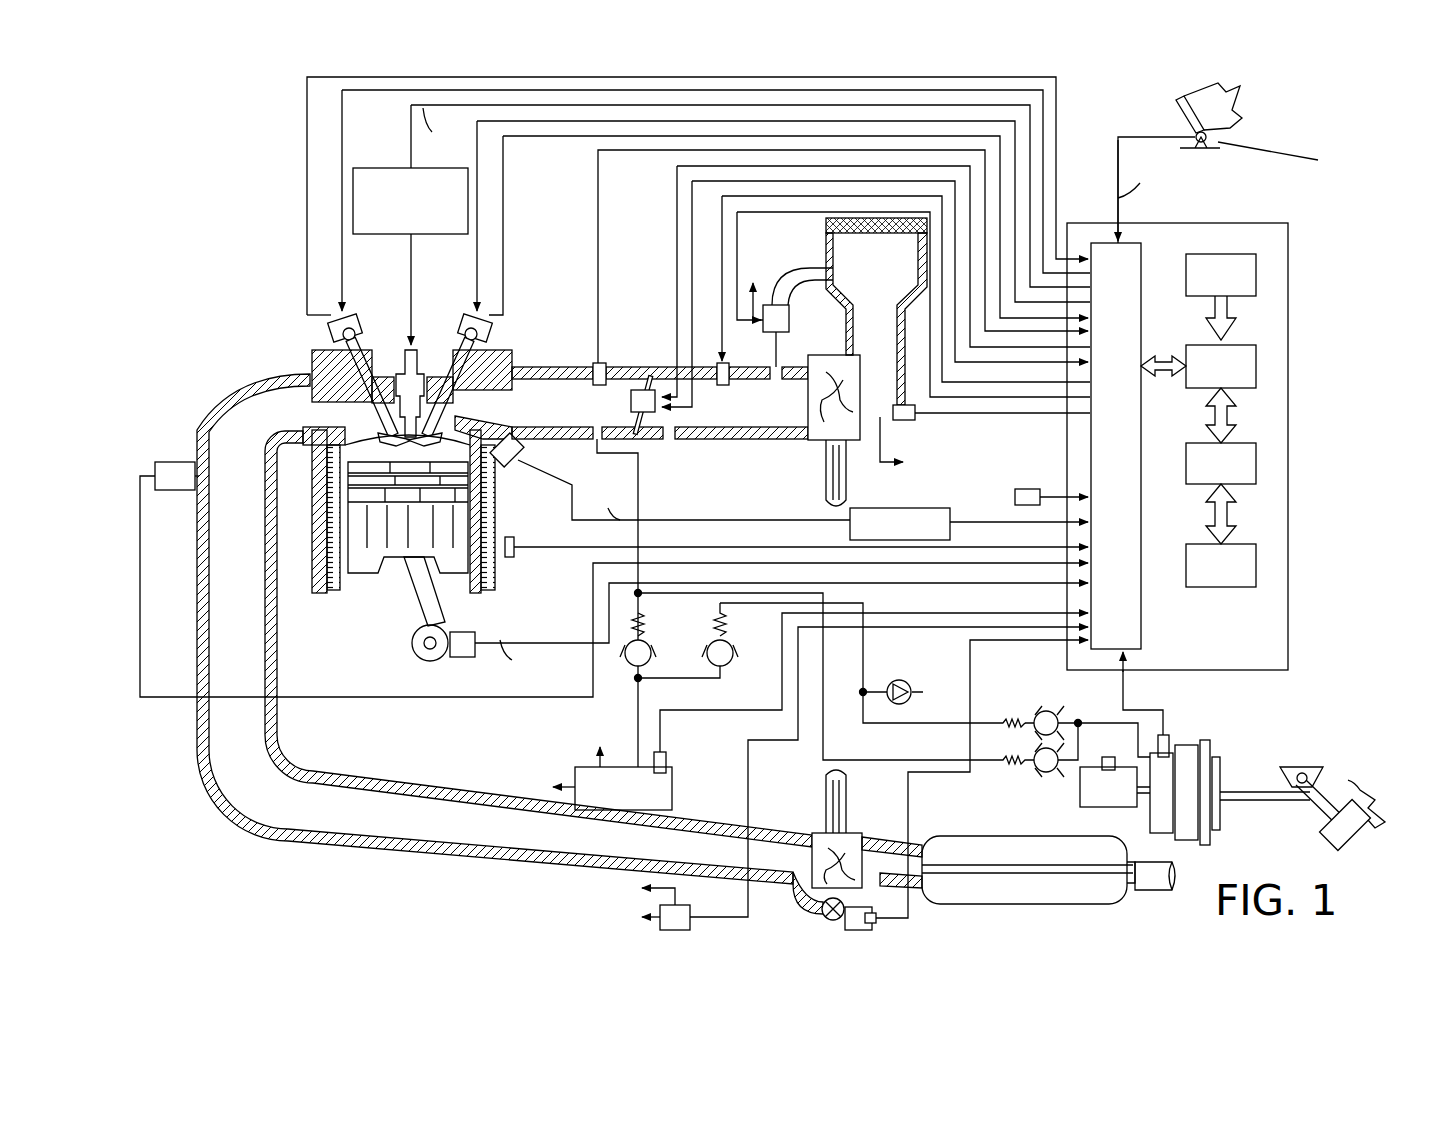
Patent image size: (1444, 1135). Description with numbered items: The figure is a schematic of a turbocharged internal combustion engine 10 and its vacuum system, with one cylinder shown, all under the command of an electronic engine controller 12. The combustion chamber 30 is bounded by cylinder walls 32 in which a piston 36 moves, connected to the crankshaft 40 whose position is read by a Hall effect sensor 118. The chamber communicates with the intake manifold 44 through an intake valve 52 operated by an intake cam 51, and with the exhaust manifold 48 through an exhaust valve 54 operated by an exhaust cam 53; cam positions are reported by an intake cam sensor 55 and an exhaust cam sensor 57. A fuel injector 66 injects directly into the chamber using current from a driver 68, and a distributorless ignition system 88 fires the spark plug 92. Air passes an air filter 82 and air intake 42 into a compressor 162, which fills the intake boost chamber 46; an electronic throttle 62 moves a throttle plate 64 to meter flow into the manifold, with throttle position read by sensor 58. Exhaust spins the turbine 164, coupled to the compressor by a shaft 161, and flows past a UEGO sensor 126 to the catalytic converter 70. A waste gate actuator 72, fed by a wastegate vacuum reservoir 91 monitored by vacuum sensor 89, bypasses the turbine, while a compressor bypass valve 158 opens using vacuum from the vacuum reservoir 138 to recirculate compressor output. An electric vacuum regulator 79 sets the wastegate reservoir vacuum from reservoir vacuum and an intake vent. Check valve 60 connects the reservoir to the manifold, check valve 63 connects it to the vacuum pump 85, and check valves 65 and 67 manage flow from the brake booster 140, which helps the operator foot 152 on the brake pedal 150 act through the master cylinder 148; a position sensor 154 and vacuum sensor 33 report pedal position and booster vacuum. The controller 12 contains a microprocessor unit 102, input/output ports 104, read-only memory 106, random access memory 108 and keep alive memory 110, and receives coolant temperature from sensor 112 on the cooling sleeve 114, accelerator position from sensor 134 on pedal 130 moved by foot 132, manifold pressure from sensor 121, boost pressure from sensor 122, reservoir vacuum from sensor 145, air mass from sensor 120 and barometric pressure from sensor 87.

The internal combustion engine 10 is at (246, 300).
The electronic engine controller 12 is at (1285, 223).
The combustion chamber 30 is at (408, 448).
The cylinder walls 32 is at (352, 582).
The vacuum sensor 33 is at (1168, 735).
The piston 36 is at (392, 548).
The crankshaft 40 is at (418, 660).
The air intake 42 is at (876, 319).
The intake manifold 44 is at (552, 403).
The intake boost chamber 46 is at (705, 403).
The exhaust manifold 48 is at (504, 629).
The intake cam 51 is at (473, 315).
The intake valve 52 is at (460, 416).
The exhaust cam 53 is at (345, 315).
The exhaust valve 54 is at (324, 395).
The intake cam sensor 55 is at (488, 330).
The exhaust cam sensor 57 is at (333, 322).
The throttle position sensor 58 is at (668, 432).
The check valve 60 is at (651, 653).
The electronic throttle 62 is at (630, 370).
The check valve 63 is at (733, 655).
The throttle plate 64 is at (650, 365).
The check valve 65 is at (1056, 718).
The fuel injector 66 is at (512, 448).
The check valve 67 is at (1030, 748).
The driver 68 is at (950, 536).
The catalytic converter 70 is at (968, 836).
The vacuum operated waste gate actuator 72 is at (820, 912).
The electric vacuum regulator 79 is at (682, 905).
The air filter 82 is at (897, 240).
The vacuum pump 85 is at (908, 682).
The barometric pressure sensor 87 is at (1015, 500).
The distributorless ignition system 88 is at (366, 168).
The vacuum sensor 89 is at (872, 920).
The wastegate vacuum reservoir 91 is at (905, 915).
The spark plug 92 is at (413, 355).
The microprocessor unit 102 is at (1258, 365).
The input/output ports 104 is at (1141, 245).
The read-only memory 106 is at (1258, 270).
The random access memory 108 is at (1258, 462).
The keep alive memory 110 is at (1258, 565).
The temperature sensor 112 is at (512, 537).
The cooling sleeve 114 is at (498, 577).
The Hall effect sensor 118 is at (470, 658).
The air mass sensor 120 is at (912, 420).
The pressure sensor 121 is at (595, 365).
The pressure sensor 122 is at (728, 365).
The Universal Exhaust Gas Oxygen sensor 126 is at (150, 470).
The accelerator pedal 130 is at (1180, 112).
The foot 132 is at (1238, 106).
The position sensor 134 is at (1284, 157).
The vacuum reservoir 138 is at (672, 798).
The brake booster 140 is at (1196, 748).
The vacuum sensor 145 is at (666, 760).
The master cylinder 148 is at (1080, 778).
The brake pedal 150 is at (1332, 826).
The operator foot 152 is at (1366, 803).
The position sensor 154 is at (1290, 772).
The compressor bypass valve 158 is at (789, 318).
The shaft 161 is at (826, 478).
The compressor 162 is at (812, 355).
The turbine 164 is at (812, 840).